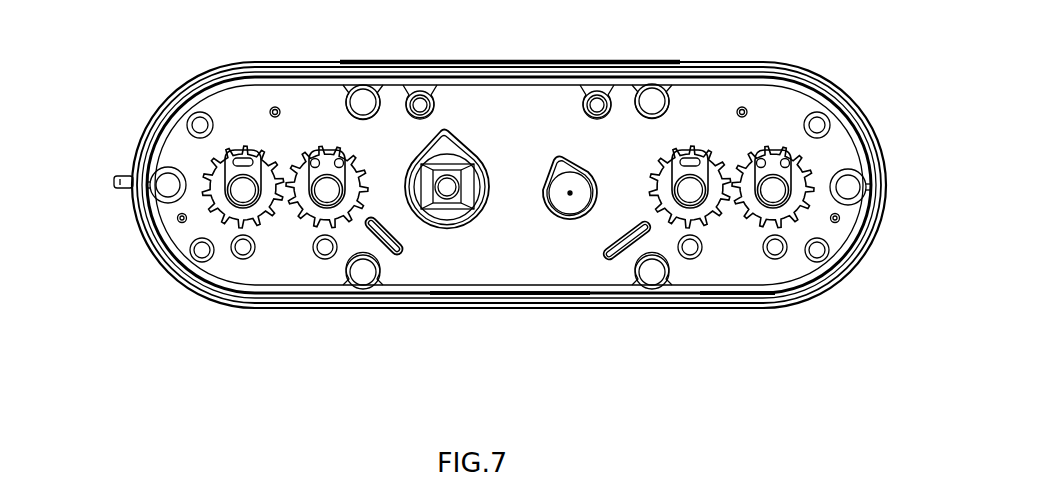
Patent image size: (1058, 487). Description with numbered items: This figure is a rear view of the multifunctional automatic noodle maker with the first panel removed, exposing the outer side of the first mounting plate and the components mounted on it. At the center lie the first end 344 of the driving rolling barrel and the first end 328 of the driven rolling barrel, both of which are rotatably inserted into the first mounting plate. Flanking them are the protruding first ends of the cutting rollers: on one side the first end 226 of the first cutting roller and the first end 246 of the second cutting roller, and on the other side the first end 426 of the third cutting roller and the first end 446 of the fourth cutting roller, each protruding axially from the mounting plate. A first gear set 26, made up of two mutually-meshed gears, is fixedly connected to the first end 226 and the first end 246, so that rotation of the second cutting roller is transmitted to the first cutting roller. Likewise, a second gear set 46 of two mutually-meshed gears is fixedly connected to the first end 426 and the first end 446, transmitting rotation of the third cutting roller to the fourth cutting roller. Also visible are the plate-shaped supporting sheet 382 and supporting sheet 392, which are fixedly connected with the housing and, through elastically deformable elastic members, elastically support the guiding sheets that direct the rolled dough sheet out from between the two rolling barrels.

The second gear set 46 is at (255, 147).
The first gear set 26 is at (708, 148).
The first end of the fourth cutting roller 446 is at (245, 185).
The first end of the third cutting roller 426 is at (318, 187).
The first end of the first cutting roller 226 is at (775, 187).
The first end of the second cutting roller 246 is at (692, 187).
The supporting sheet 392 is at (382, 238).
The supporting sheet 382 is at (628, 247).
The first end of the driving rolling barrel 344 is at (448, 193).
The first end of the driven rolling barrel 328 is at (567, 208).